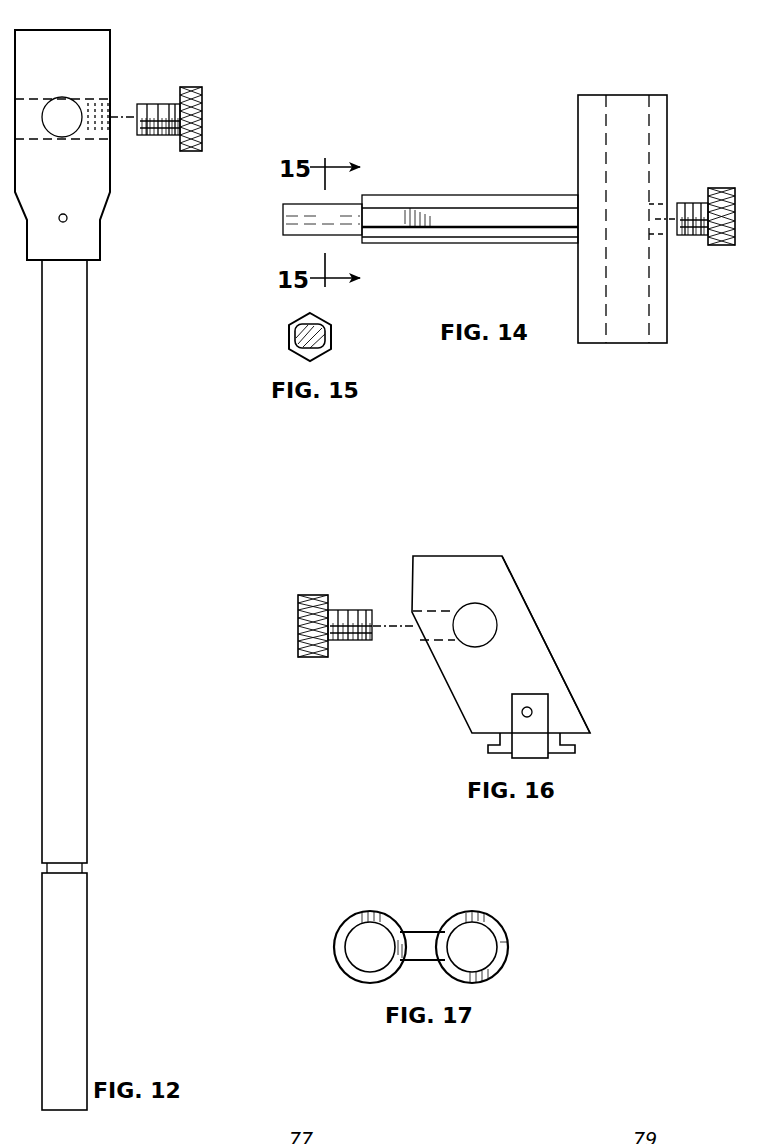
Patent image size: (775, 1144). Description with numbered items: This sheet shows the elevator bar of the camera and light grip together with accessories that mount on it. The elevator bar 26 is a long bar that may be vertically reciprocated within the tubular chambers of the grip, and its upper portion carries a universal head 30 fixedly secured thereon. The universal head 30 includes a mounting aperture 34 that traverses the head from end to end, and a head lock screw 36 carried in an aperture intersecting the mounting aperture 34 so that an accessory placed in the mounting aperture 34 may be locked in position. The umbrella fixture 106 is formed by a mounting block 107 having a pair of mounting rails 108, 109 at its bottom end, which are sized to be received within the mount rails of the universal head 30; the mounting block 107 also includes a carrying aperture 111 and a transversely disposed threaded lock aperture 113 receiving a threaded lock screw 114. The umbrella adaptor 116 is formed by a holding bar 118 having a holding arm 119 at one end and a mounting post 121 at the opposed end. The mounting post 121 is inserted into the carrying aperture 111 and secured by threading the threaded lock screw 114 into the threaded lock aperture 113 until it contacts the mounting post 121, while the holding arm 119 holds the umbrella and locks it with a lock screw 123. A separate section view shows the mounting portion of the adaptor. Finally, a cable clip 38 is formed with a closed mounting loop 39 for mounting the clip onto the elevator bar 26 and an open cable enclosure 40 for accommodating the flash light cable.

In FIG. 12, the universal head 30 is at (112, 78).
In FIG. 12, the mounting aperture 34 is at (72, 132).
In FIG. 12, the head lock screw 36 is at (204, 118).
In FIG. 12, the elevator bar 26 is at (88, 625).
In FIG. 14, the mounting post 121 is at (283, 216).
In FIG. 14, the umbrella adaptor 116 is at (500, 190).
In FIG. 14, the holding bar 118 is at (500, 246).
In FIG. 14, the holding arm 119 is at (578, 128).
In FIG. 14, the lock screw 123 is at (720, 188).
In FIG. 16, the umbrella fixture 106 is at (536, 618).
In FIG. 16, the mounting block 107 is at (540, 658).
In FIG. 16, the carrying aperture 111 is at (478, 615).
In FIG. 16, the threaded lock aperture 113 is at (425, 636).
In FIG. 16, the threaded lock screw 114 is at (350, 641).
In FIG. 16, the mounting rail 108 is at (488, 750).
In FIG. 16, the mounting rail 109 is at (578, 751).
In FIG. 17, the cable clip 38 is at (430, 932).
In FIG. 17, the closed mounting loop 39 is at (340, 923).
In FIG. 17, the open cable enclosure 40 is at (512, 880).